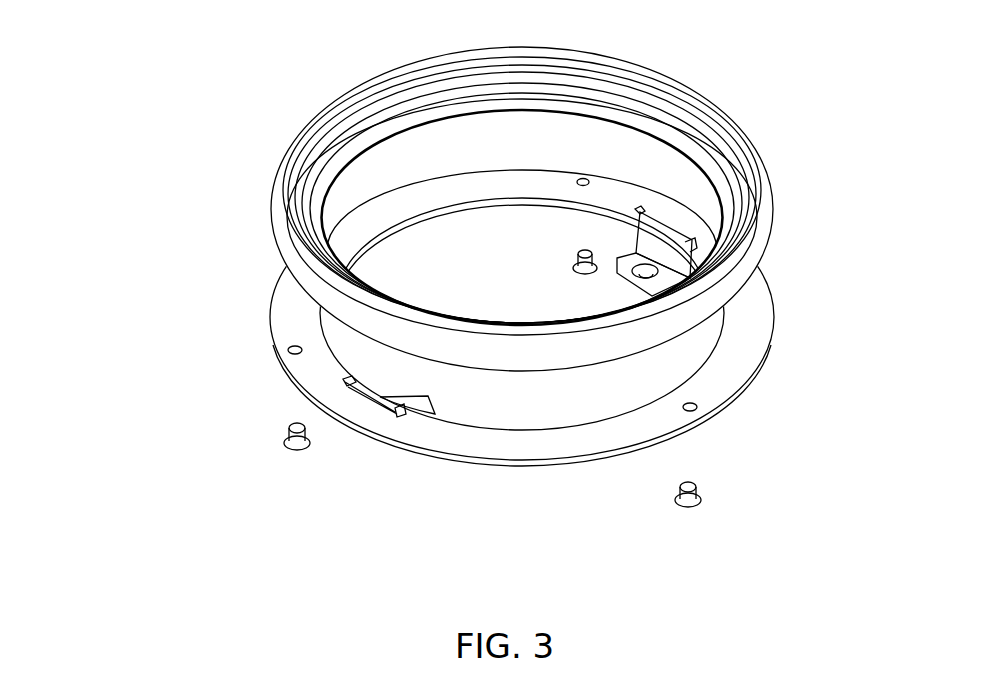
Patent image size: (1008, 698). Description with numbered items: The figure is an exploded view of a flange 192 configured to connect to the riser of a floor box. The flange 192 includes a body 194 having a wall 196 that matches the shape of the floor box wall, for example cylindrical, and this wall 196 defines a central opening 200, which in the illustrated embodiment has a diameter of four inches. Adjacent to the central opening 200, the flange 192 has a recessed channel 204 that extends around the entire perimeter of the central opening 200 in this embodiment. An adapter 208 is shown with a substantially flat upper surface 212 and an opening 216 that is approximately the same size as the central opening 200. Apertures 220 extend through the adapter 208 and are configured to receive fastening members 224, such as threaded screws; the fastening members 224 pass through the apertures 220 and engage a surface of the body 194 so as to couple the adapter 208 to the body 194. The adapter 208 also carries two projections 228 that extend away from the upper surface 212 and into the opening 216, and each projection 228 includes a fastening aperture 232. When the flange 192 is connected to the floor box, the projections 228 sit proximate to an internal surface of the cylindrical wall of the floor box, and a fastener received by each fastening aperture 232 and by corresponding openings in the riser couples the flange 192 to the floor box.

The flange 192 is at (150, 105).
The body 194 is at (765, 145).
The wall 196 is at (302, 278).
The central opening 200 is at (390, 170).
The recessed channel 204 is at (390, 108).
The adapter 208 is at (740, 393).
The upper surface 212 is at (752, 325).
The opening 216 is at (560, 415).
The apertures 220 is at (583, 179).
The fastening members 224 is at (582, 258).
The projections 228 is at (658, 255).
The fastening aperture 232 is at (631, 273).